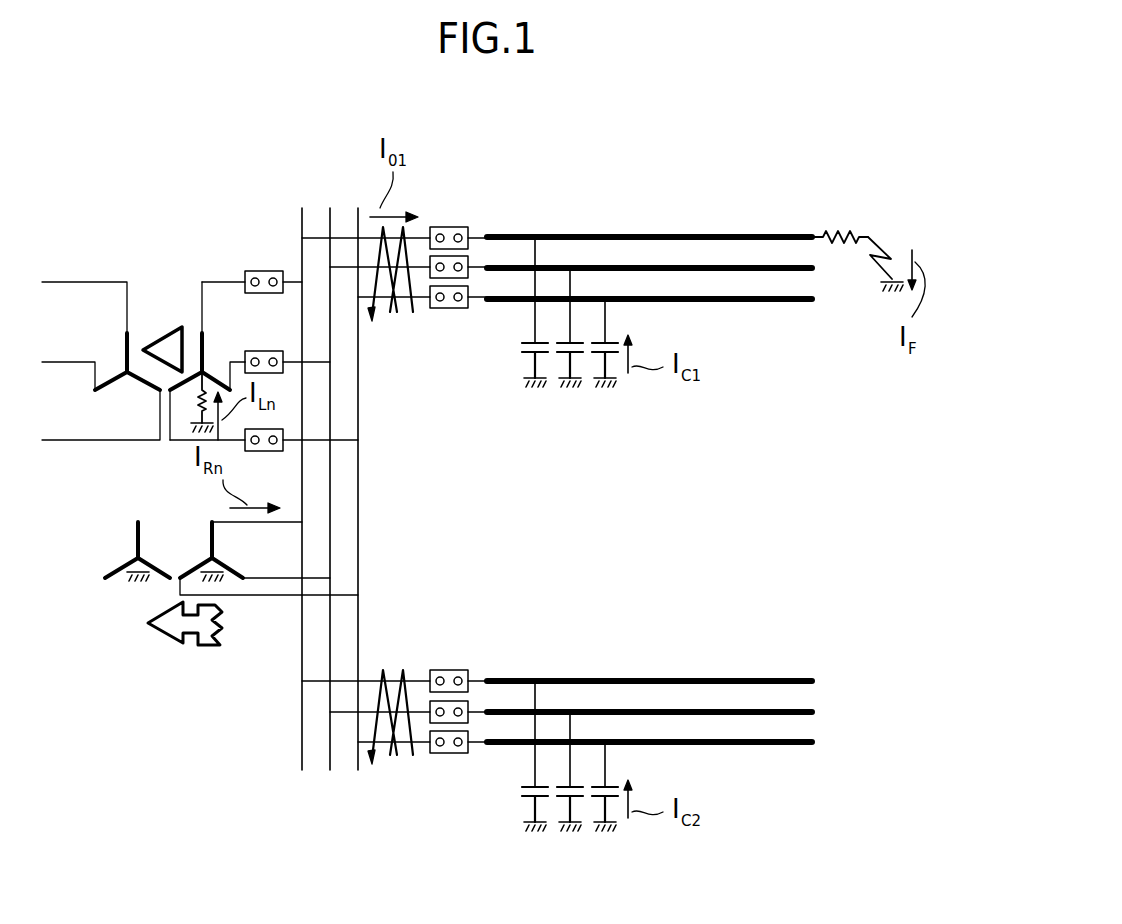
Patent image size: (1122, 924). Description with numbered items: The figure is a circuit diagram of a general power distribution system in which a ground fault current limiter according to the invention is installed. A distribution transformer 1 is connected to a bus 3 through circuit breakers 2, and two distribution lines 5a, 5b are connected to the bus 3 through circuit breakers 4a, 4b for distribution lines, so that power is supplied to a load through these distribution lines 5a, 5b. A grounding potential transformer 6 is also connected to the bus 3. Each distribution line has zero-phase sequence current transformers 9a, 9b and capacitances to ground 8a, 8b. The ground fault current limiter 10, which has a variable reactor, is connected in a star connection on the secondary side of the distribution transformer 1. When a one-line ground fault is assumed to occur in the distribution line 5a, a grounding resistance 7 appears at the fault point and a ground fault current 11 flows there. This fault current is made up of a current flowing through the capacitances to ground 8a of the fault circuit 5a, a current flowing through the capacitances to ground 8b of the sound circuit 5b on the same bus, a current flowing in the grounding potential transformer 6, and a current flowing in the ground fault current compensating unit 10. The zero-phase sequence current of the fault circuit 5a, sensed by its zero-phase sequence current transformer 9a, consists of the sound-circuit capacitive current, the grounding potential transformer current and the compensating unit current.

The distribution transformer 1 is at (158, 293).
The circuit breakers 2 is at (265, 270).
The bus 3 is at (358, 473).
The circuit breaker for distribution line 4a is at (442, 225).
The circuit breaker for distribution line 4b is at (442, 668).
The distribution line 5a is at (625, 234).
The distribution line 5b is at (625, 678).
The grounding potential transformer 6 is at (172, 537).
The grounding resistance 7 is at (840, 247).
The capacitances to ground 8a is at (513, 348).
The capacitances to ground 8b is at (513, 792).
The zero-phase sequence current transformer 9a is at (405, 318).
The zero-phase sequence current transformer 9b is at (405, 762).
The ground fault current limiter 10 is at (190, 420).
The ground fault current 11 is at (882, 250).